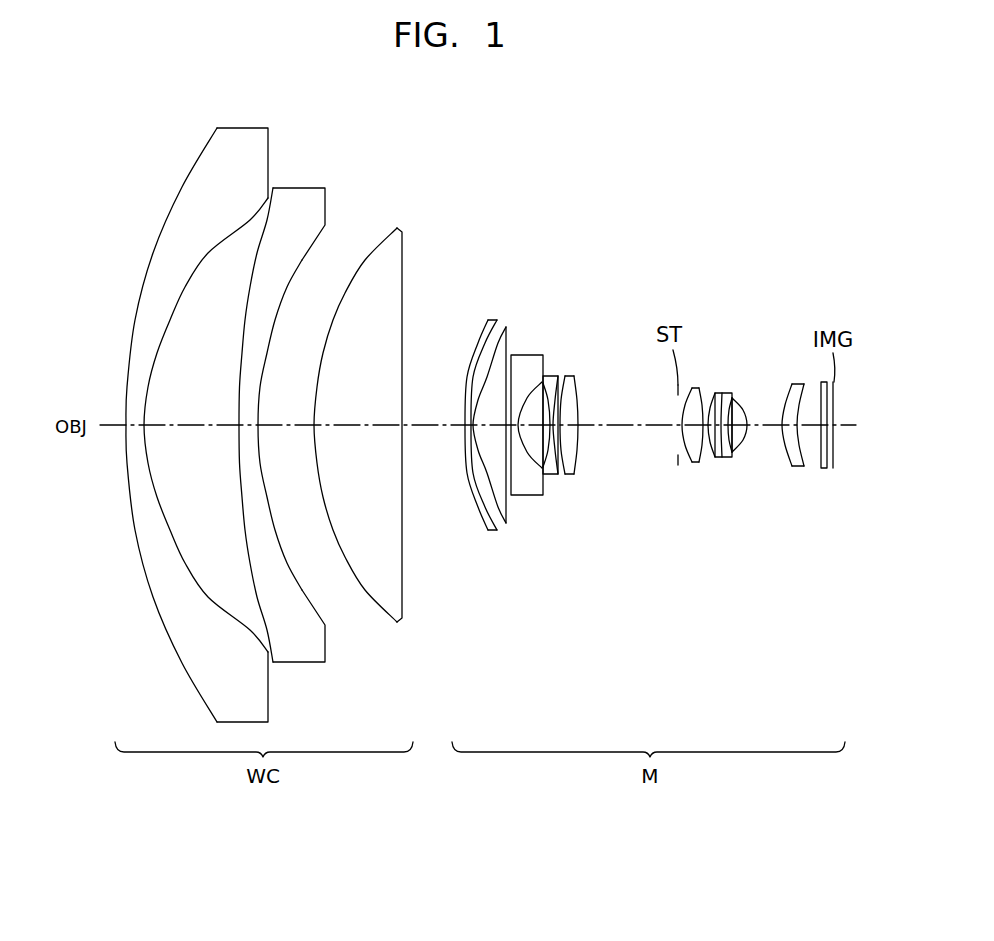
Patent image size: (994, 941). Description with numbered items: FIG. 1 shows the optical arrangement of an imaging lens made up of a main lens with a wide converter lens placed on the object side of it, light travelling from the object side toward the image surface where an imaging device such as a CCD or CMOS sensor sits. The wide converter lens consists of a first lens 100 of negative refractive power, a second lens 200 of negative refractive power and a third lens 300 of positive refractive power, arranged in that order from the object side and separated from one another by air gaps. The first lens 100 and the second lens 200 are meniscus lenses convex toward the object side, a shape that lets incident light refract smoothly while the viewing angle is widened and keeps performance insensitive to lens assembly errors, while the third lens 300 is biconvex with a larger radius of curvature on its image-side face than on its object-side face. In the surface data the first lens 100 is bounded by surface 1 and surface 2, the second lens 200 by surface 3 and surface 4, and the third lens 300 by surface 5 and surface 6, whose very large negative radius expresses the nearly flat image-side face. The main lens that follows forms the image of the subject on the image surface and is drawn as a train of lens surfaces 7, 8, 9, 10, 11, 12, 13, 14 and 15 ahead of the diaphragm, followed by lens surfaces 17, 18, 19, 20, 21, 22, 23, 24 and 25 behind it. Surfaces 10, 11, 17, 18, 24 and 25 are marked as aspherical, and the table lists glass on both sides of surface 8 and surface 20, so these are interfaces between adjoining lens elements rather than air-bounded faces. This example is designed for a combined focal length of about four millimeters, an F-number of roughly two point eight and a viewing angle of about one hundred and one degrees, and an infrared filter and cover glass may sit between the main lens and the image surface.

The lens surface 1 is at (130, 355).
The lens surface 2 is at (165, 326).
The lens surface 3 is at (250, 276).
The lens surface 4 is at (300, 261).
The lens surface 5 is at (363, 265).
The lens surface 6 is at (402, 267).
The lens surface 7 is at (483, 332).
The lens surface 8 is at (482, 363).
The lens surface 9 is at (503, 390).
The aspherical lens surface 10 is at (516, 370).
The aspherical lens surface 11 is at (524, 393).
The lens surface 12 is at (549, 385).
The lens surface 13 is at (560, 395).
The lens surface 14 is at (567, 398).
The lens surface 15 is at (577, 413).
The aspherical lens surface 17 is at (690, 460).
The aspherical lens surface 18 is at (700, 453).
The lens surface 19 is at (715, 393).
The lens surface 20 is at (722, 393).
The lens surface 21 is at (728, 398).
The lens surface 22 is at (742, 400).
The lens surface 23 is at (747, 410).
The aspherical lens surface 24 is at (788, 463).
The aspherical lens surface 25 is at (802, 462).
The first lens 100 is at (212, 429).
The second lens 200 is at (263, 419).
The third lens 300 is at (397, 405).